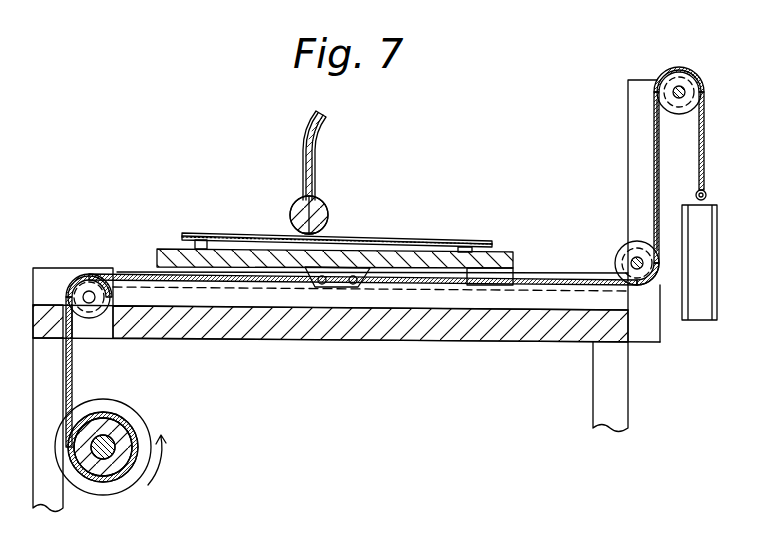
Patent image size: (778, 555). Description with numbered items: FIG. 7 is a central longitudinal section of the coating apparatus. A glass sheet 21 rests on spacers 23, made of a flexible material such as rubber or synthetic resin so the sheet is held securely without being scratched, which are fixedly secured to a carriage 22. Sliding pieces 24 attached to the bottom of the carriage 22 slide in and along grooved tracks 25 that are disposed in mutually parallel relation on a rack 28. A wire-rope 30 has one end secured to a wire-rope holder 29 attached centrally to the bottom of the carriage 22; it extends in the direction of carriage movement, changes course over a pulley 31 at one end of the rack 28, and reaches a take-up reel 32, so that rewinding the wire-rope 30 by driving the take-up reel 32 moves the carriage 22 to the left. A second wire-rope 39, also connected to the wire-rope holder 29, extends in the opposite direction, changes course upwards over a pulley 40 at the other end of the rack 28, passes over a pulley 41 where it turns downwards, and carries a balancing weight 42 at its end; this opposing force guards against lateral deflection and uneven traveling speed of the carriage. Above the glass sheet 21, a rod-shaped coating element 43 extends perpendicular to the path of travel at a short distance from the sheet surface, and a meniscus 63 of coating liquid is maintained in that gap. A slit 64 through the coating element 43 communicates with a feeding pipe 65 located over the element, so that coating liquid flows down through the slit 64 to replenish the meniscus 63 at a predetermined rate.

The glass sheet 21 is at (440, 241).
The carriage 22 is at (511, 250).
The spacers 23 is at (198, 233).
The sliding pieces 24 is at (165, 271).
The grooved tracks 25 is at (557, 279).
The rack 28 is at (44, 305).
The wire-rope holder 29 is at (333, 292).
The wire-rope 30 is at (113, 277).
The pulley 31 is at (77, 276).
The take-up reel 32 is at (143, 418).
The second wire-rope 39 is at (582, 290).
The pulley 40 is at (622, 248).
The pulley 41 is at (672, 74).
The balancing weight 42 is at (700, 322).
The coating element 43 is at (330, 205).
The meniscus 63 is at (336, 237).
The slit 64 is at (292, 208).
The feeding pipe 65 is at (318, 143).